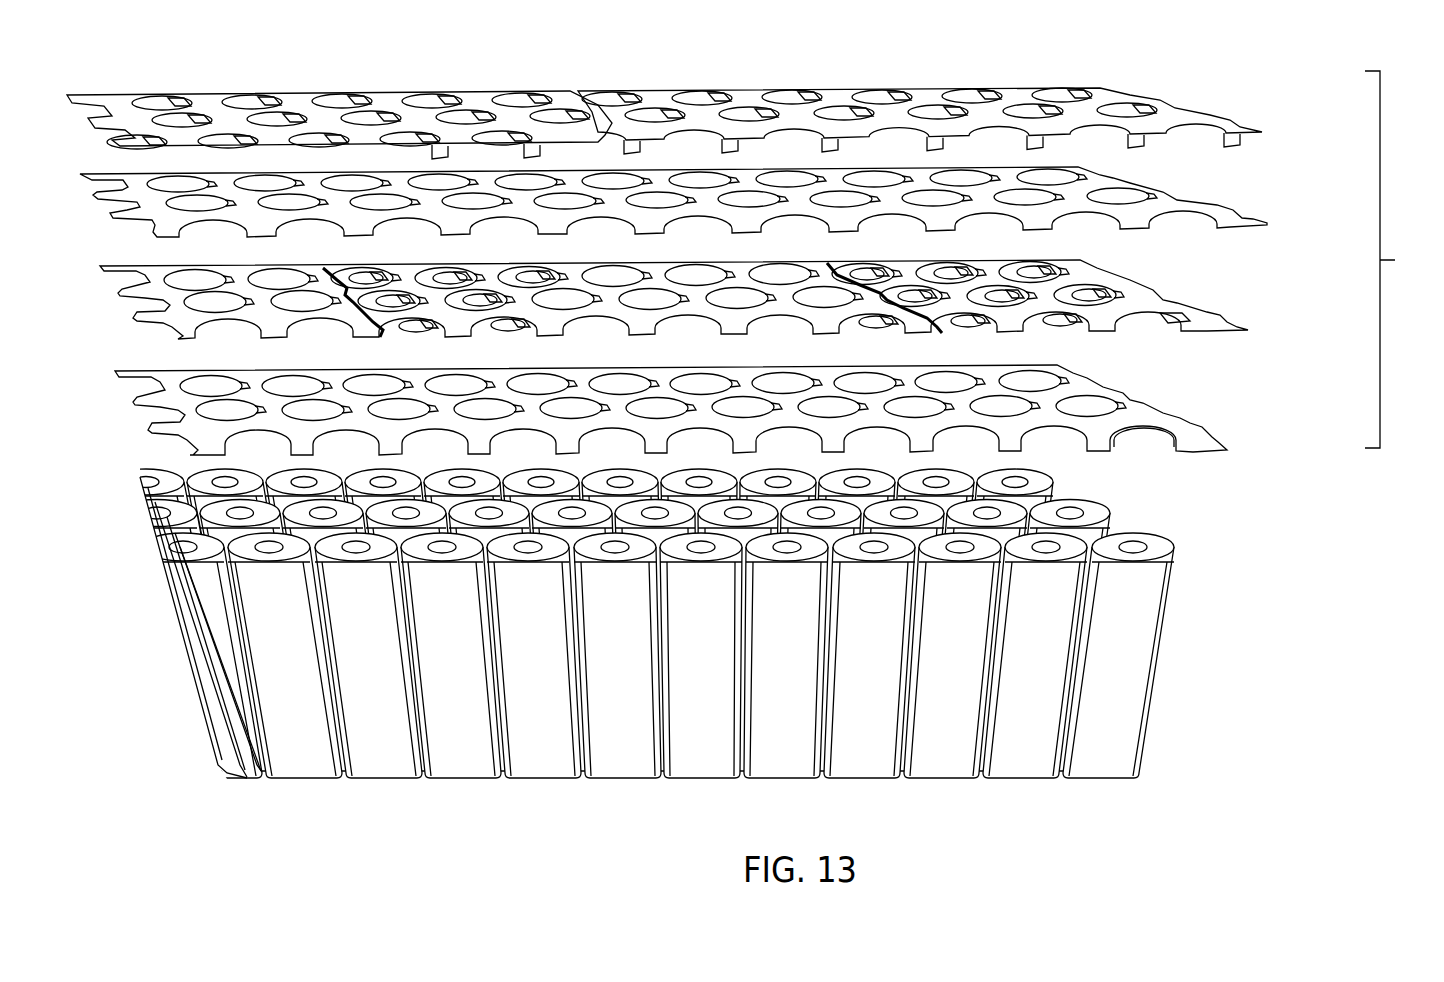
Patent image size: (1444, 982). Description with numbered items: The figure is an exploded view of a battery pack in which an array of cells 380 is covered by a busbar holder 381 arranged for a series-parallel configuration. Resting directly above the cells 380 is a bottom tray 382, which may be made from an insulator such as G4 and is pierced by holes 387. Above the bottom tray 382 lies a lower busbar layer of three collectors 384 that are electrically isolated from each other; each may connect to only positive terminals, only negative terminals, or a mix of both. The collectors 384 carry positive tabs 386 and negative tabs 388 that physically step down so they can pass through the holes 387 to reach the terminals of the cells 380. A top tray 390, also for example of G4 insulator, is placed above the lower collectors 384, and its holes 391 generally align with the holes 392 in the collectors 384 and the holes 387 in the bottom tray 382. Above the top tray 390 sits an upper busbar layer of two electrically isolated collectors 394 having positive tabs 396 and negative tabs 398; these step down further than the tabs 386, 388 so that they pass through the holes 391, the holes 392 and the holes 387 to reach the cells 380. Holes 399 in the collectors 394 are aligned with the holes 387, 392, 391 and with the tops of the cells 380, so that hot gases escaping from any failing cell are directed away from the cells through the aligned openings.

The cells 380 is at (1160, 657).
The busbar holder 381 is at (753, 250).
The bottom tray 382 is at (729, 410).
The collectors 384 is at (721, 295).
The positive tabs 386 is at (1173, 328).
The holes 387 is at (1157, 430).
The negative tabs 388 is at (915, 338).
The top tray 390 is at (725, 210).
The holes 391 is at (1100, 204).
The holes 392 is at (1013, 267).
The collectors 394 is at (705, 111).
The positive tabs 396 is at (884, 140).
The negative tabs 398 is at (1230, 140).
The holes 399 is at (1034, 94).